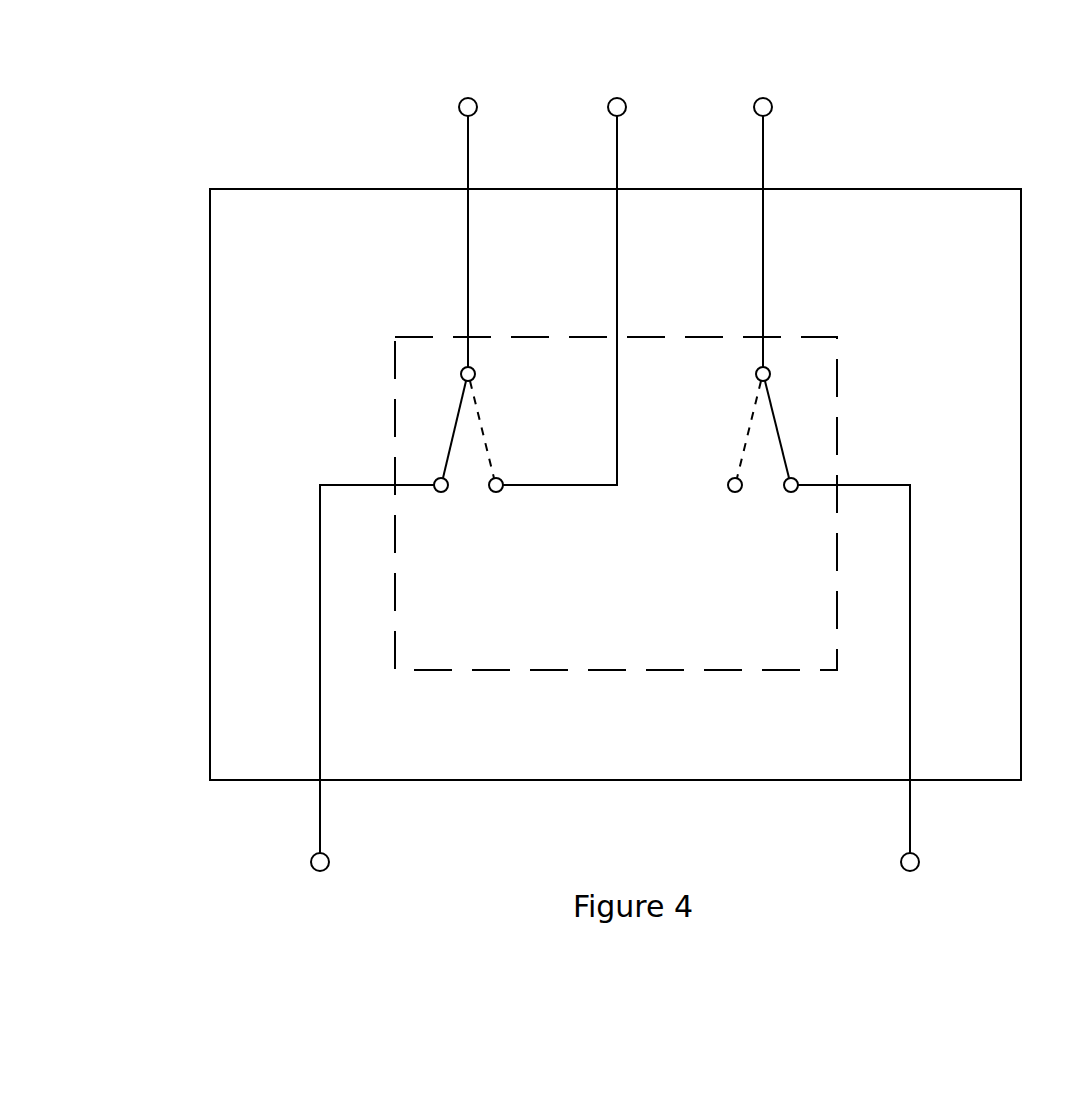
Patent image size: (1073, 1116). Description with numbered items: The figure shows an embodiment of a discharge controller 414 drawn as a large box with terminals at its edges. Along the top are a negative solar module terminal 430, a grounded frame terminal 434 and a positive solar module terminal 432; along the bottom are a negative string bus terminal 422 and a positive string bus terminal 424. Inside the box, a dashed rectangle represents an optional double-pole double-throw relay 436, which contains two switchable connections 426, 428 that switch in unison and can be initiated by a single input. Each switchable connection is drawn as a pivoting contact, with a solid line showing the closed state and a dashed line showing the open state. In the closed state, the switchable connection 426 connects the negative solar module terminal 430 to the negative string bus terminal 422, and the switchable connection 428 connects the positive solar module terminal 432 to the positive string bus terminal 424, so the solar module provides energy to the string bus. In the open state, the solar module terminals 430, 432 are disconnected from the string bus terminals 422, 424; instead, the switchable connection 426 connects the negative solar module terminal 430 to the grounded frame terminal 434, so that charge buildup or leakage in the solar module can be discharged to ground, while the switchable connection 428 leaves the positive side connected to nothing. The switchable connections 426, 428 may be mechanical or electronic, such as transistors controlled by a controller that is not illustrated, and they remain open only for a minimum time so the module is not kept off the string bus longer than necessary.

The discharge controller 414 is at (234, 189).
The negative string bus terminal 422 is at (318, 703).
The positive string bus terminal 424 is at (911, 703).
The switchable connection 426 is at (484, 496).
The switchable connection 428 is at (758, 496).
The negative solar module terminal 430 is at (400, 213).
The positive solar module terminal 432 is at (830, 213).
The grounded frame terminal 434 is at (596, 247).
The double-pole double-throw relay 436 is at (836, 337).